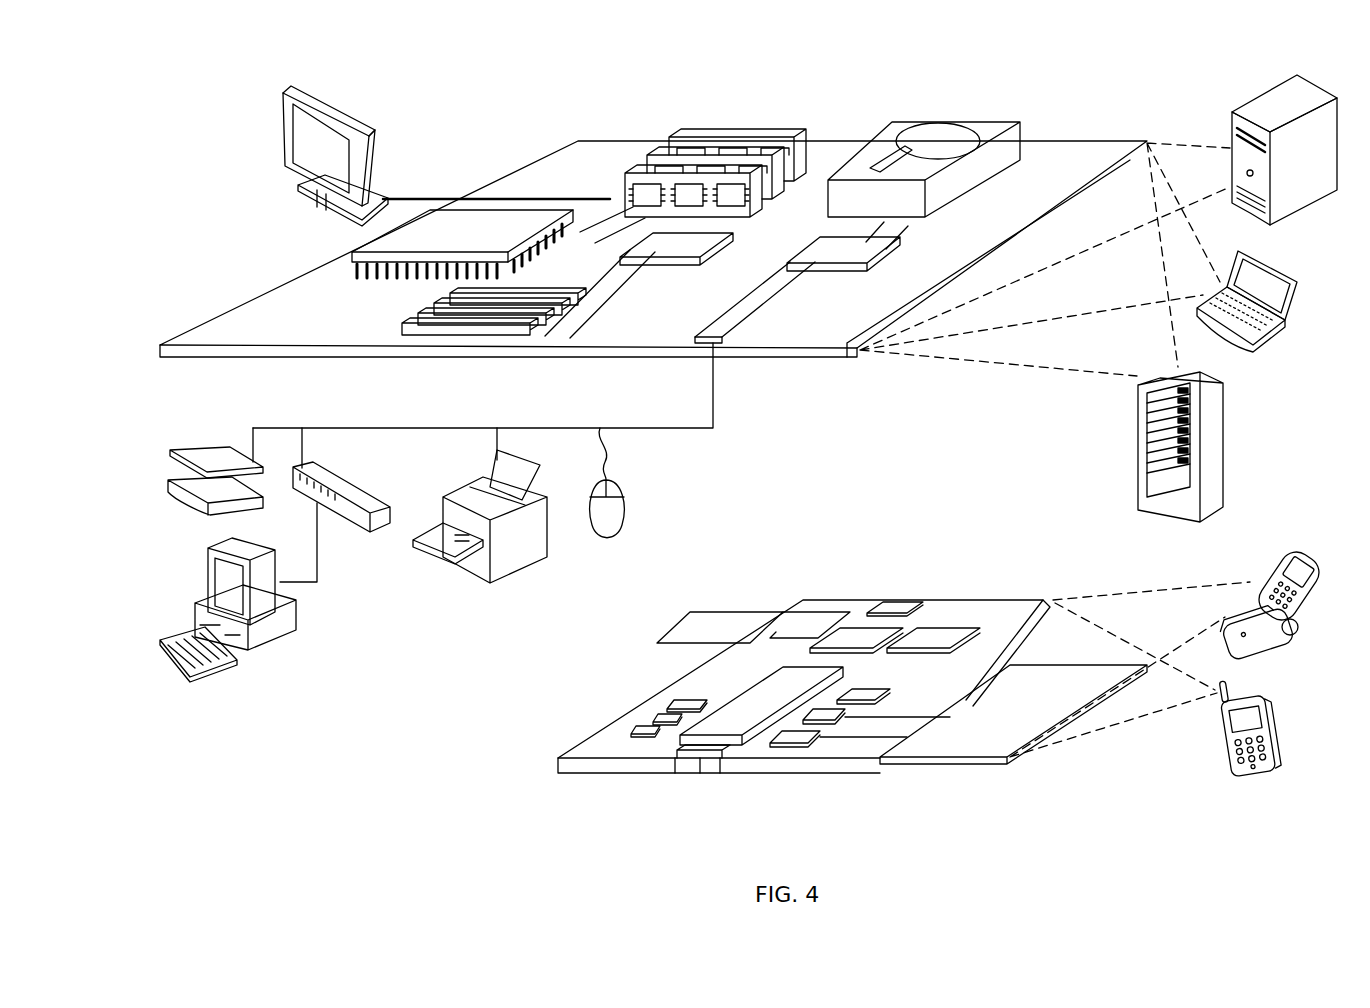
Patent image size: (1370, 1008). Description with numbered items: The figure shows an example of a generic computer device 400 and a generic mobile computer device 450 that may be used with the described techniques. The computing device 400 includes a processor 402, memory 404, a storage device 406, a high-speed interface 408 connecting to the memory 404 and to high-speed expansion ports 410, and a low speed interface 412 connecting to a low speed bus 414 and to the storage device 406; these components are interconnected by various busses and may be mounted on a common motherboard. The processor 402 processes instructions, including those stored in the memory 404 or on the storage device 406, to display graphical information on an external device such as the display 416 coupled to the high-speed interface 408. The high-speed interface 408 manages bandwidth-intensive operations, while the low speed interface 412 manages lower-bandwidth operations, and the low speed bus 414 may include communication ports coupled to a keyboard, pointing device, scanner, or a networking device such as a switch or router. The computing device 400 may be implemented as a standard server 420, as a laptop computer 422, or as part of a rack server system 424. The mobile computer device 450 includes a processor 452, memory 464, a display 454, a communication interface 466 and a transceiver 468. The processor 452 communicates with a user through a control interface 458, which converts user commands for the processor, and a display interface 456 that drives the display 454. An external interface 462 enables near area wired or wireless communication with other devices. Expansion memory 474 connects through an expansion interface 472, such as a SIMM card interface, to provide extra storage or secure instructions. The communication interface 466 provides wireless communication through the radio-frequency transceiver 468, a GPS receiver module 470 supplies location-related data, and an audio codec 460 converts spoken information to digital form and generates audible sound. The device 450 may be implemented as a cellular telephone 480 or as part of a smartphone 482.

The computing device 400 is at (475, 108).
The processor 402 is at (352, 257).
The memory 404 is at (677, 133).
The storage device 406 is at (908, 123).
The high-speed interface 408 is at (652, 243).
The high-speed expansion ports 410 is at (427, 317).
The low speed interface 412 is at (827, 250).
The low speed bus 414 is at (722, 345).
The display 416 is at (290, 90).
The standard server 420 is at (1232, 127).
The laptop computer 422 is at (1293, 278).
The rack server system 424 is at (1138, 467).
The mobile computer device 450 is at (533, 768).
The processor 452 is at (735, 728).
The display 454 is at (970, 747).
The display interface 456 is at (803, 745).
The control interface 458 is at (837, 713).
The audio codec 460 is at (863, 692).
The external interface 462 is at (698, 772).
The memory 464 is at (652, 718).
The communication interface 466 is at (857, 637).
The transceiver 468 is at (930, 637).
The GPS receiver module 470 is at (905, 605).
The expansion interface 472 is at (772, 612).
The expansion memory 474 is at (702, 612).
The cellular telephone 480 is at (1280, 528).
The smartphone 482 is at (1217, 742).